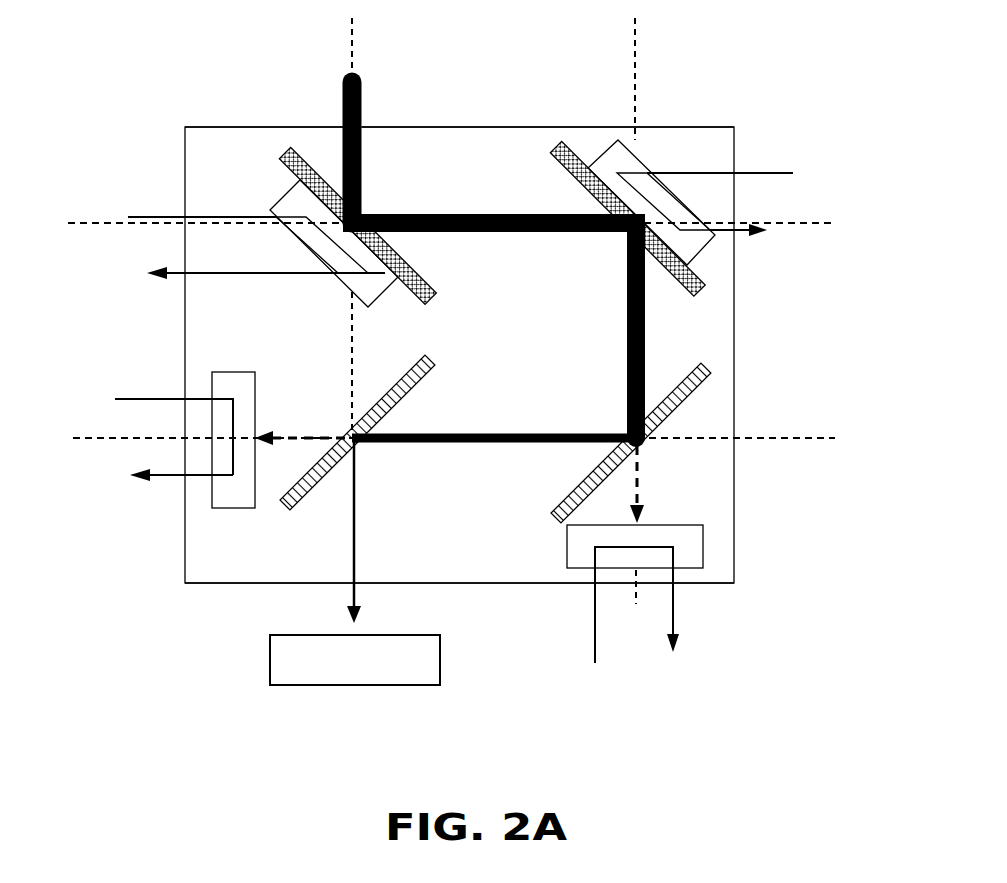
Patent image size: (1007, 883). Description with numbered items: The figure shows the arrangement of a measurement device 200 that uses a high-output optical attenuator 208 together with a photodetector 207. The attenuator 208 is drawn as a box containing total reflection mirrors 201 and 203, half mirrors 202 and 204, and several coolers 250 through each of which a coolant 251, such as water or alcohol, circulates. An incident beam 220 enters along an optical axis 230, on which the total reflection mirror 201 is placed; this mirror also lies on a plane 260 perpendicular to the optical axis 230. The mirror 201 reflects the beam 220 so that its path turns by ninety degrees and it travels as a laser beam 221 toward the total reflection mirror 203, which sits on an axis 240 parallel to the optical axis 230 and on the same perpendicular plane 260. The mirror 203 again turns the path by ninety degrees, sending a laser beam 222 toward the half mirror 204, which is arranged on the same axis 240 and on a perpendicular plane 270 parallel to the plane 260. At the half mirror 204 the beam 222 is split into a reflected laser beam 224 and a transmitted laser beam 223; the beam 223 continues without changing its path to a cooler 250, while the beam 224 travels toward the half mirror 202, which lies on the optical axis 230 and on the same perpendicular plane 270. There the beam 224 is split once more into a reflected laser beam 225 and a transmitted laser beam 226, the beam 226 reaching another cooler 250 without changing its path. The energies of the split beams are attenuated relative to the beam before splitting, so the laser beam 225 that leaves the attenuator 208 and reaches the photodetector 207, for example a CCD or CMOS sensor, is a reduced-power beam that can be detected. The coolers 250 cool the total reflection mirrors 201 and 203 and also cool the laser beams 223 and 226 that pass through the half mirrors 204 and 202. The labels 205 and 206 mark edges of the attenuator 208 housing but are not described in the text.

The measurement device 200 is at (138, 148).
The total reflection mirror 201 is at (288, 163).
The half mirror 202 is at (284, 508).
The total reflection mirror 203 is at (704, 289).
The half mirror 204 is at (682, 400).
The top side surface 205 is at (491, 126).
The bottom side surface 206 is at (493, 585).
The photodetector 207 is at (269, 661).
The high-output optical attenuator 208 is at (218, 126).
The incident beam 220 is at (363, 159).
The laser beam 221 is at (493, 234).
The laser beam 222 is at (626, 334).
The laser beam 223 is at (642, 487).
The laser beam 224 is at (497, 432).
The laser beam 225 is at (358, 500).
The laser beam 226 is at (300, 433).
The optical axis 230 is at (356, 52).
The axis 240 is at (638, 51).
The cooler 250 is at (650, 162).
The coolant 251 is at (773, 172).
The perpendicular plane 260 is at (93, 227).
The perpendicular plane 270 is at (88, 441).